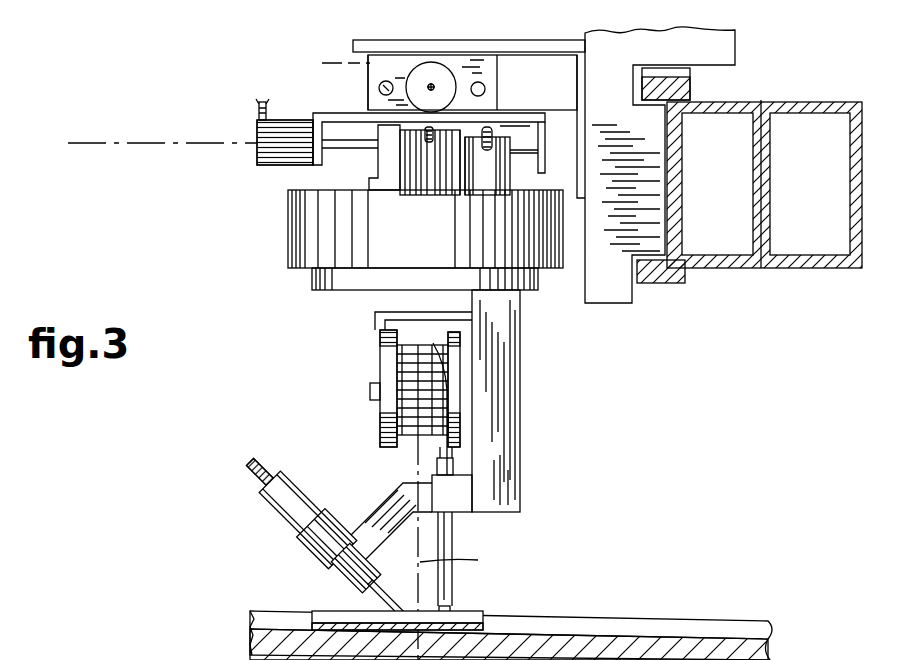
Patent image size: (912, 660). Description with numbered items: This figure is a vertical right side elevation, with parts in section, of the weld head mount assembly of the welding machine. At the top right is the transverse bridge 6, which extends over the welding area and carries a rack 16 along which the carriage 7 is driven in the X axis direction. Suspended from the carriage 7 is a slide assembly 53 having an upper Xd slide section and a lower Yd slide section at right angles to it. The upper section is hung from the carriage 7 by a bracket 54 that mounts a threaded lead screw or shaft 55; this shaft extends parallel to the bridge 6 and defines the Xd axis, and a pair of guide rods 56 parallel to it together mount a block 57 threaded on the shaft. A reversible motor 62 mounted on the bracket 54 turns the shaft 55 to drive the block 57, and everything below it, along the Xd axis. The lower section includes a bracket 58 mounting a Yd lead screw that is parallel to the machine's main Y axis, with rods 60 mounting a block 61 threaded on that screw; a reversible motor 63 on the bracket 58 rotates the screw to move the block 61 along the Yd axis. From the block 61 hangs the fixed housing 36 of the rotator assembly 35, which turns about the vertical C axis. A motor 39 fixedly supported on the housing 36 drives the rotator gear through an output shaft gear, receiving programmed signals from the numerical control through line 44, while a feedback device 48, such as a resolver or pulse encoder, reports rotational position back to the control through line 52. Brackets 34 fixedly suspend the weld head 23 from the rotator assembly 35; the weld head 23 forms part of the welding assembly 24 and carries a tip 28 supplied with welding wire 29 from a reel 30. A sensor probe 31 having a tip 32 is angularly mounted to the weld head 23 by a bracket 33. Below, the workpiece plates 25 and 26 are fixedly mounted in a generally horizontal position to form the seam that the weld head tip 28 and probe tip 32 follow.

The bridge 6 is at (791, 102).
The carriage 7 is at (648, 38).
The rack 16 is at (690, 78).
The weld head 23 is at (441, 577).
The welding assembly 24 is at (150, 208).
The plate 25 is at (266, 610).
The plate 26 is at (330, 612).
The tip 28 is at (453, 610).
The welding wire 29 is at (450, 390).
The reel 30 is at (382, 442).
The probe 31 is at (286, 532).
The tip 32 is at (383, 594).
The bracket 33 is at (373, 532).
The bracket 34 is at (510, 348).
The rotator assembly 35 is at (216, 239).
The housing 36 is at (300, 250).
The motor 39 is at (425, 180).
The line 44 is at (433, 145).
The feedback device 48 is at (483, 183).
The line 52 is at (492, 132).
The slide assembly 53 is at (192, 80).
The bracket 54 is at (375, 60).
The threaded lead screw or shaft 55 is at (432, 82).
The guide rods 56 is at (378, 88).
The block 57 is at (483, 60).
The bracket 58 is at (322, 160).
The rods 60 is at (523, 150).
The block 61 is at (377, 187).
The reversible motor 62 is at (428, 84).
The reversible motor 63 is at (269, 165).